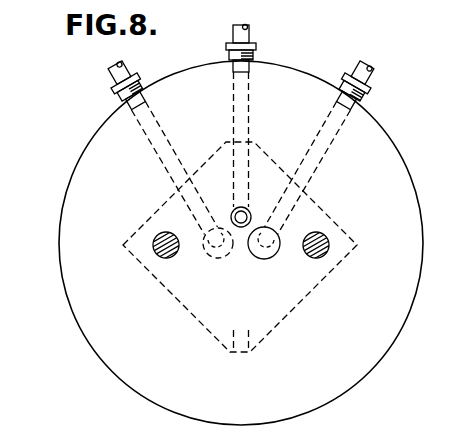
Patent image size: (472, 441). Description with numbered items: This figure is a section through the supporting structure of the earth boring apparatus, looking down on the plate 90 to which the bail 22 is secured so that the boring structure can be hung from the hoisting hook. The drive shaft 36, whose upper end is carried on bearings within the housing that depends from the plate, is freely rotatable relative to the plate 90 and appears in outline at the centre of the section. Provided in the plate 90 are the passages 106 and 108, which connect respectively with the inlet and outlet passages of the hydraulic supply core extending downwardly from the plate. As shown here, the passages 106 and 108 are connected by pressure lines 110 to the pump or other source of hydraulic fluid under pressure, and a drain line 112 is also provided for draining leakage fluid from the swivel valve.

The plate 90 is at (409, 173).
The drive shaft 36 is at (301, 307).
The drain line 112 is at (248, 27).
The pressure lines 110 is at (113, 76).
The passage 106 is at (143, 128).
The passage 108 is at (336, 135).
The bail 22 is at (326, 237).